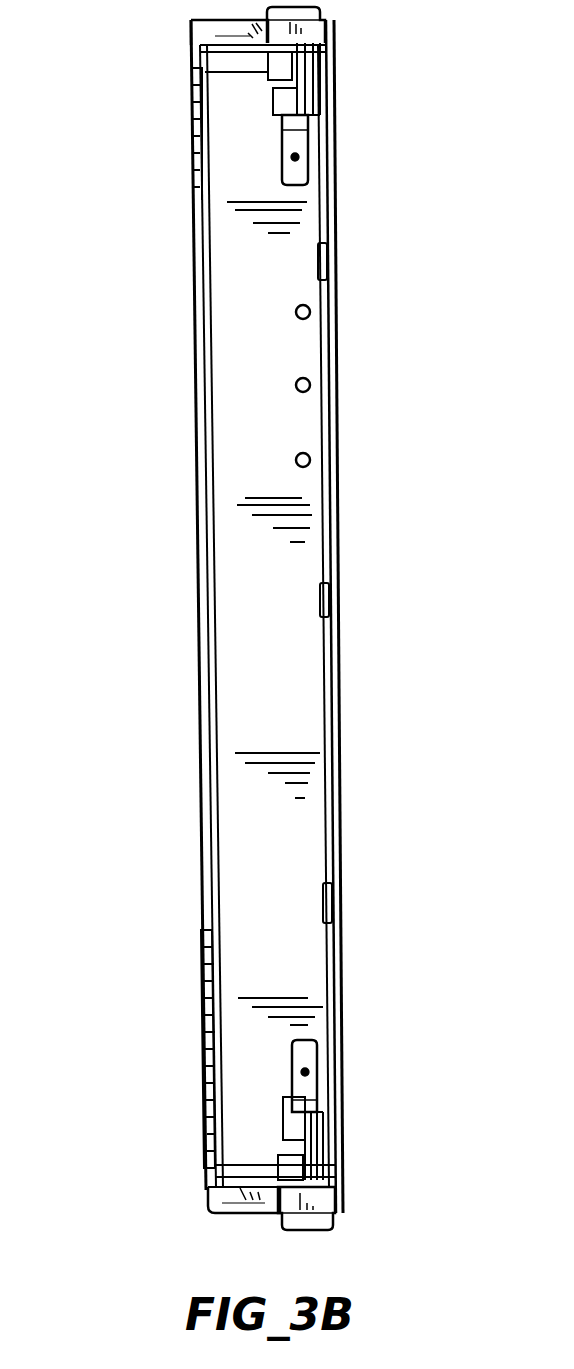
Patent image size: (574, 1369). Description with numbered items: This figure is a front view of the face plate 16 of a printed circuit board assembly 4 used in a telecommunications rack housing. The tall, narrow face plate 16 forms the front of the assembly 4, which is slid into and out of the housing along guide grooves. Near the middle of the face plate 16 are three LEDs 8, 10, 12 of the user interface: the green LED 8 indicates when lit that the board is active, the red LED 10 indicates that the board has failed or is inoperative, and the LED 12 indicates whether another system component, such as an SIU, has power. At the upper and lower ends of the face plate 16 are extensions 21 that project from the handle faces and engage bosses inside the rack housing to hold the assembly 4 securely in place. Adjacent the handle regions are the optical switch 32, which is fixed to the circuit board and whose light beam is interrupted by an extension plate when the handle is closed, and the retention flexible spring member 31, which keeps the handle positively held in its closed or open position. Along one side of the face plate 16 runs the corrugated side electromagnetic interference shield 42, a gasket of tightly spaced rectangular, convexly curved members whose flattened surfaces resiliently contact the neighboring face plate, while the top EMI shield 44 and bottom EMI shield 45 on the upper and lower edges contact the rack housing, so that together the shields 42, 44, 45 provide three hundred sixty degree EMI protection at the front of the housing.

The printed circuit board assembly 4 is at (358, 838).
The LED 8 is at (312, 385).
The LED 10 is at (295, 318).
The LED 12 is at (295, 465).
The face plate 16 is at (268, 602).
The extension 21 is at (320, 5).
The retention flexible spring member 31 is at (275, 127).
The optical switch 32 is at (337, 128).
The corrugated side electromagnetic interference shield 42 is at (205, 952).
The top EMI shield 44 is at (255, 29).
The bottom EMI shield 45 is at (243, 1185).